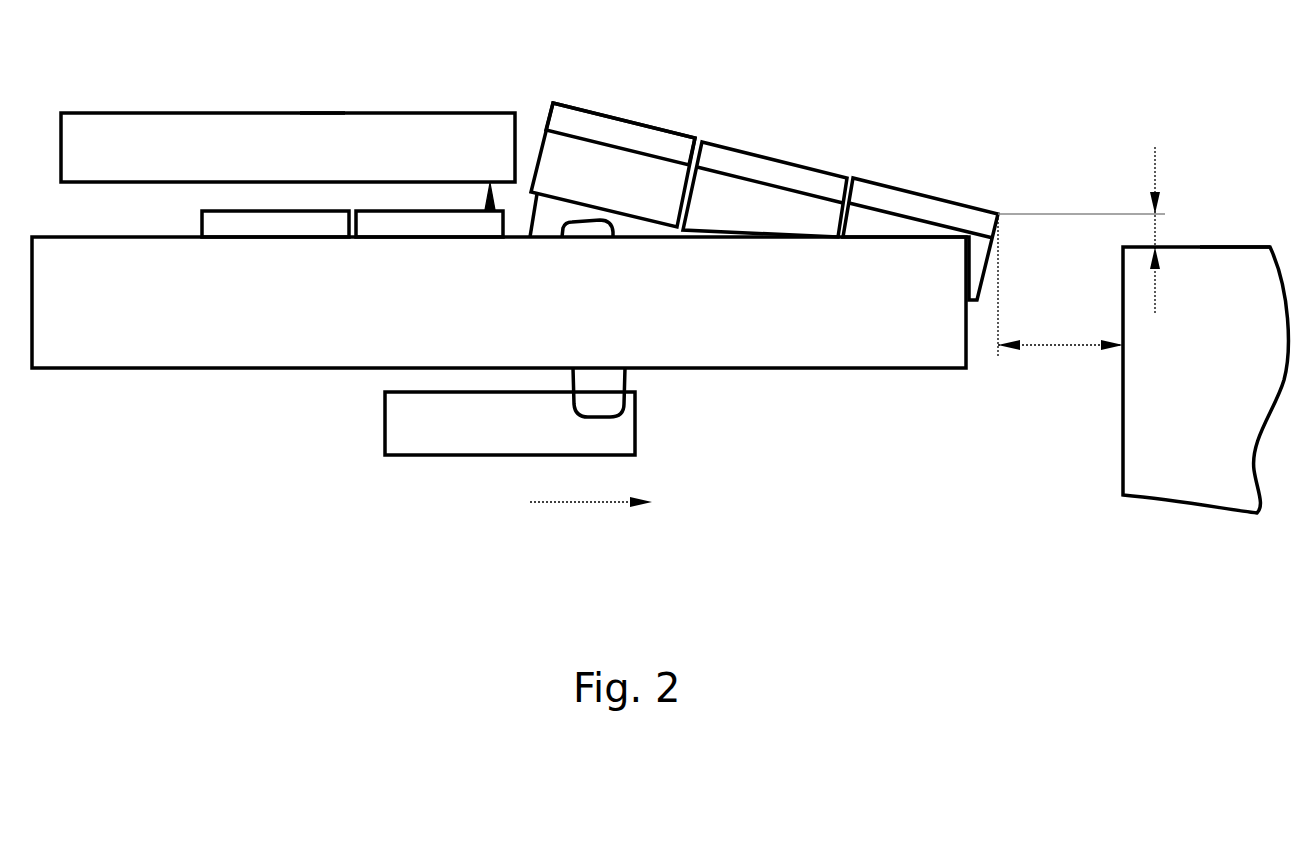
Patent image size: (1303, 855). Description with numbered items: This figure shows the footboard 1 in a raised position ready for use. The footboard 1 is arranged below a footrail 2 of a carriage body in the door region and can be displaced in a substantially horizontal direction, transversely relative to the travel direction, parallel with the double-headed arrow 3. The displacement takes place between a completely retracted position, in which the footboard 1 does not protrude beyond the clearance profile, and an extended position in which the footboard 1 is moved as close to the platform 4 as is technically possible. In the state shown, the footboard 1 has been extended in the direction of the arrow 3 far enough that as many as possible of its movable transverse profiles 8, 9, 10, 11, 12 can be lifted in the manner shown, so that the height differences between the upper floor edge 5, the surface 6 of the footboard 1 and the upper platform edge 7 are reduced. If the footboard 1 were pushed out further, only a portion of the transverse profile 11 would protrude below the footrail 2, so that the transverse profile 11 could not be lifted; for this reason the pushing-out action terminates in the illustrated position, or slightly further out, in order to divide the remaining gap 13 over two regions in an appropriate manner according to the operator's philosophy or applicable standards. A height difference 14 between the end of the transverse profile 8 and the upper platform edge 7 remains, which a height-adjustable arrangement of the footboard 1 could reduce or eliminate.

The footboard 1 is at (590, 327).
The footrail 2 is at (152, 156).
The double-headed arrow 3 is at (592, 503).
The platform 4 is at (1206, 426).
The upper floor edge 5 is at (323, 112).
The surface of the footboard 6 is at (583, 108).
The upper platform edge 7 is at (1245, 247).
The transverse profile 8 is at (858, 227).
The transverse profile 9 is at (733, 207).
The transverse profile 10 is at (609, 170).
The transverse profile 11 is at (410, 225).
The transverse profile 12 is at (287, 223).
The remaining gap 13 is at (1060, 286).
The height difference 14 is at (1158, 230).